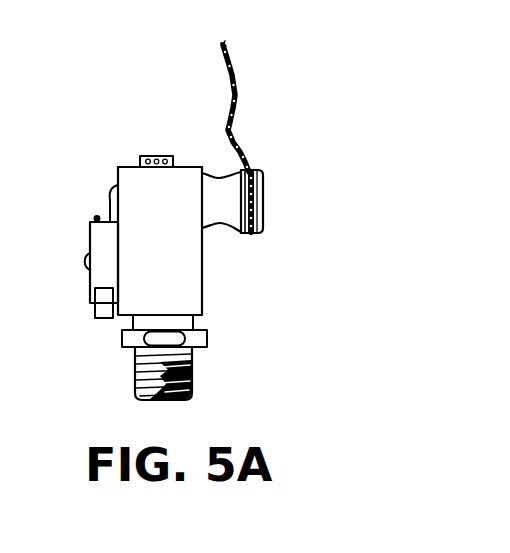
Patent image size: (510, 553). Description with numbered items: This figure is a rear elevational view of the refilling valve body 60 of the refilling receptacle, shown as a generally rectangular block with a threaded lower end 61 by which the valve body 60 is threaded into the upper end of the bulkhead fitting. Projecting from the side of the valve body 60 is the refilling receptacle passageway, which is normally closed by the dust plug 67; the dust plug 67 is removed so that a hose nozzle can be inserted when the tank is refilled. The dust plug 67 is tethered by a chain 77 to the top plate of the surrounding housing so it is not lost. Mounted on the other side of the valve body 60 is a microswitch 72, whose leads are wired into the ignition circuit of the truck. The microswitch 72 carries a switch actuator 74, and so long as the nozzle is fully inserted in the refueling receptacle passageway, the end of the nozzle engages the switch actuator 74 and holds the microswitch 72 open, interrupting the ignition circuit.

The refilling valve body 60 is at (173, 243).
The threaded stem 61 is at (193, 392).
The dust plug 67 is at (221, 212).
The microswitch 72 is at (102, 247).
The switch actuator 74 is at (95, 216).
The chain 77 is at (237, 107).